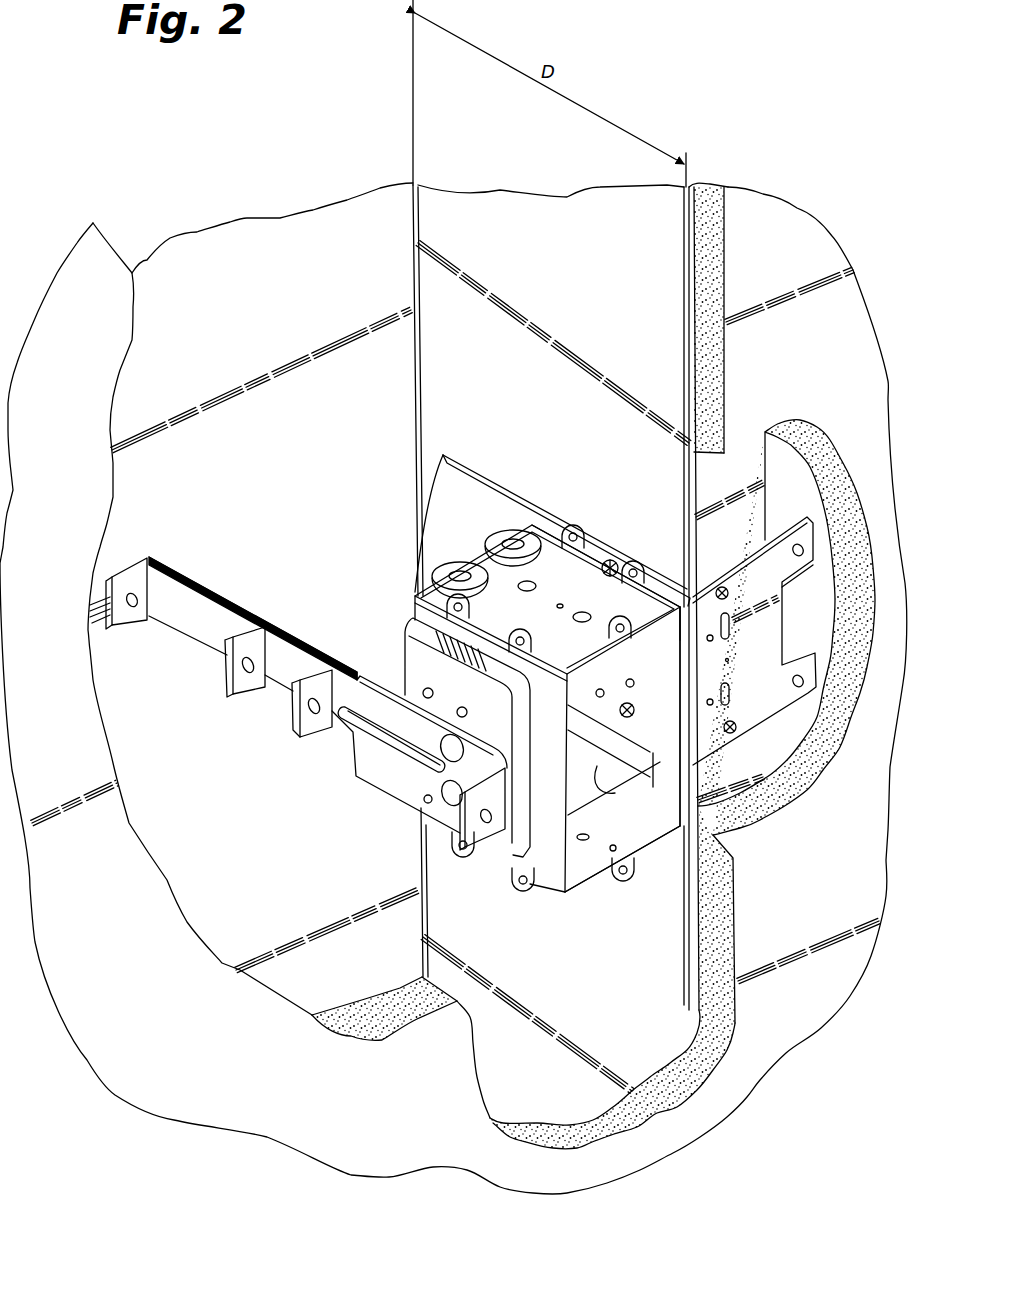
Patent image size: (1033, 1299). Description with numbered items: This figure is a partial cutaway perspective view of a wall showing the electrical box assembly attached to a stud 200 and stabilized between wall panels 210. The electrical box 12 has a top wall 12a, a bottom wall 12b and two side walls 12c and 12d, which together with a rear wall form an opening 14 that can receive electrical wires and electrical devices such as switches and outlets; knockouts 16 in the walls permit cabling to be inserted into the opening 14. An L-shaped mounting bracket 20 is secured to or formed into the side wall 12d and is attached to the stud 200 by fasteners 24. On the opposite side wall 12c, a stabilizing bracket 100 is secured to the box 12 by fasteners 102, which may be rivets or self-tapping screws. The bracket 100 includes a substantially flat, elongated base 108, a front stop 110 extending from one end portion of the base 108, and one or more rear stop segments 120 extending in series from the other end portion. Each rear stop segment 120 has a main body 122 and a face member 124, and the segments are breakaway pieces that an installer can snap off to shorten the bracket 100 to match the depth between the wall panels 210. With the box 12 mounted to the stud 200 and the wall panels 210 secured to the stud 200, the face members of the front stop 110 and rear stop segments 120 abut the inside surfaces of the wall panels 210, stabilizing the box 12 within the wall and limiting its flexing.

The electrical box 12 is at (523, 736).
The top wall 12a is at (653, 606).
The bottom wall 12b is at (568, 880).
The side wall 12c is at (550, 877).
The side wall 12d is at (663, 795).
The opening 14 is at (633, 820).
The knockouts 16 is at (503, 535).
The mounting bracket 20 is at (481, 467).
The fasteners 24 is at (723, 587).
The bracket 100 is at (318, 708).
The fasteners 102 is at (449, 751).
The base 108 is at (381, 674).
The front stop 110 is at (493, 867).
The rear stop segments 120 is at (207, 581).
The main body 122 is at (177, 618).
The face member 124 is at (133, 573).
The stud 200 is at (547, 240).
The wall panel 210 is at (223, 267).